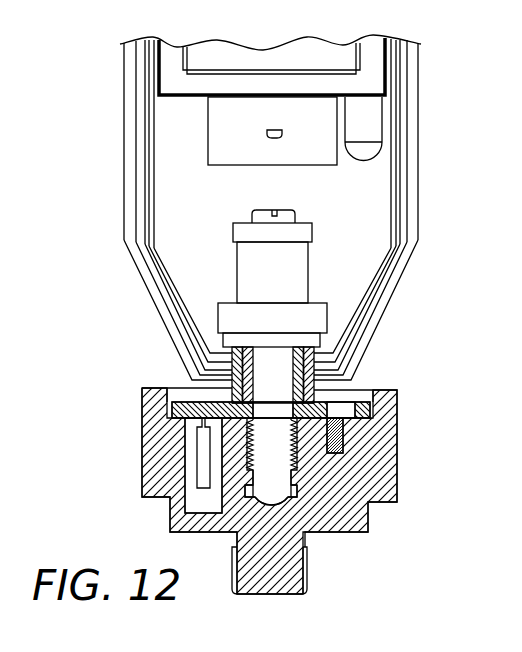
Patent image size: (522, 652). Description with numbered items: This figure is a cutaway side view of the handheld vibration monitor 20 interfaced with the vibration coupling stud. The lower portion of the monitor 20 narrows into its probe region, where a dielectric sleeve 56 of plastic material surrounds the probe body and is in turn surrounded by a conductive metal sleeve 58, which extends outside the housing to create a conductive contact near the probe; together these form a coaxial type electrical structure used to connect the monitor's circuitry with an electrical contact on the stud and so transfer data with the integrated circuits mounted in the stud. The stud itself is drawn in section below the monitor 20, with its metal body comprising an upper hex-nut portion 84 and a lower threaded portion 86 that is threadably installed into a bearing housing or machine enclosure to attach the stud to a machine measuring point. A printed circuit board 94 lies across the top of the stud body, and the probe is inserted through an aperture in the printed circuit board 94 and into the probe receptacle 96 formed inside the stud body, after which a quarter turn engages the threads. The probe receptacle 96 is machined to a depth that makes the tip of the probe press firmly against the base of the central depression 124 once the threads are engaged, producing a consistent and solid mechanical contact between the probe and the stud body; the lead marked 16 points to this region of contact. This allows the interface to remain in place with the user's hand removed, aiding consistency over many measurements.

The handheld vibration monitor 20 is at (93, 168).
The conductive metal sleeve 58 is at (183, 366).
The dielectric sleeve 56 is at (318, 380).
The printed circuit board 94 is at (188, 401).
The upper hex-nut portion 84 is at (158, 448).
The probe receptacle 96 is at (250, 472).
The central depression 124 is at (252, 507).
The outlet passage 16 is at (305, 488).
The lower threaded portion 86 is at (268, 586).